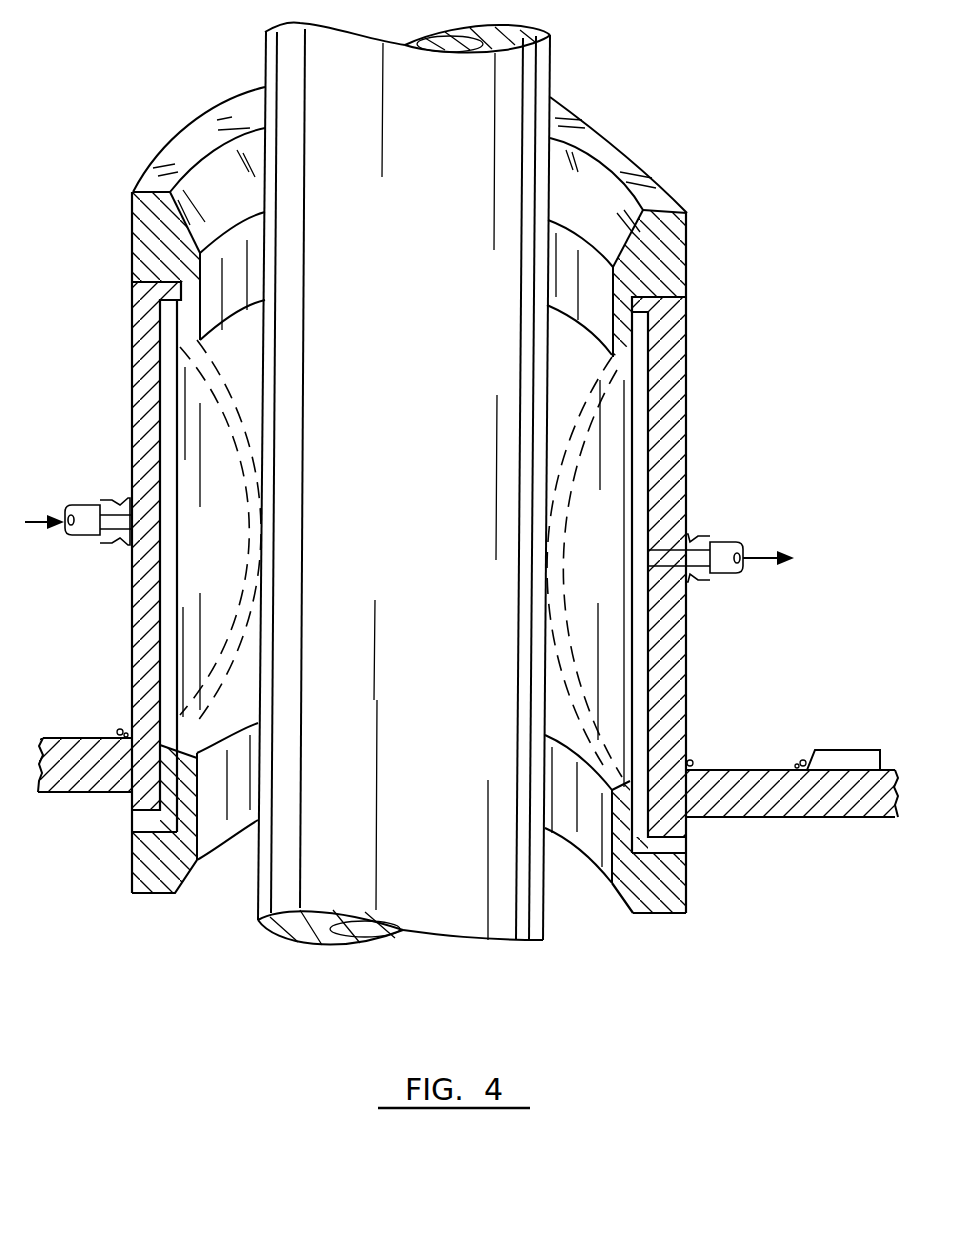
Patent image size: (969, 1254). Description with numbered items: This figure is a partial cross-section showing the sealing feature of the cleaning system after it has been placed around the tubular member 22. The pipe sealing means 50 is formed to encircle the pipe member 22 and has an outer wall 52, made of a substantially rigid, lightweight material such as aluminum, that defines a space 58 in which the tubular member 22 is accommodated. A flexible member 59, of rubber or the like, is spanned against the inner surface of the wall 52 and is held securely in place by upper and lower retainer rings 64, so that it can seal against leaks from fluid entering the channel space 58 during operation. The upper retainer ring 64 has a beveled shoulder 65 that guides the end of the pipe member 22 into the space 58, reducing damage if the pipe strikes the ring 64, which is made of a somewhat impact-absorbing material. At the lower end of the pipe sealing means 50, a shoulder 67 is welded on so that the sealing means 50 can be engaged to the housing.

The tubular member 22 is at (527, 70).
The pipe sealing means 50 is at (702, 398).
The outer wall 52 is at (137, 590).
The space 58 is at (590, 372).
The flexible member 59 is at (243, 506).
The retainer rings 64 is at (162, 240).
The beveled shoulder 65 is at (212, 185).
The shoulder 67 is at (720, 773).